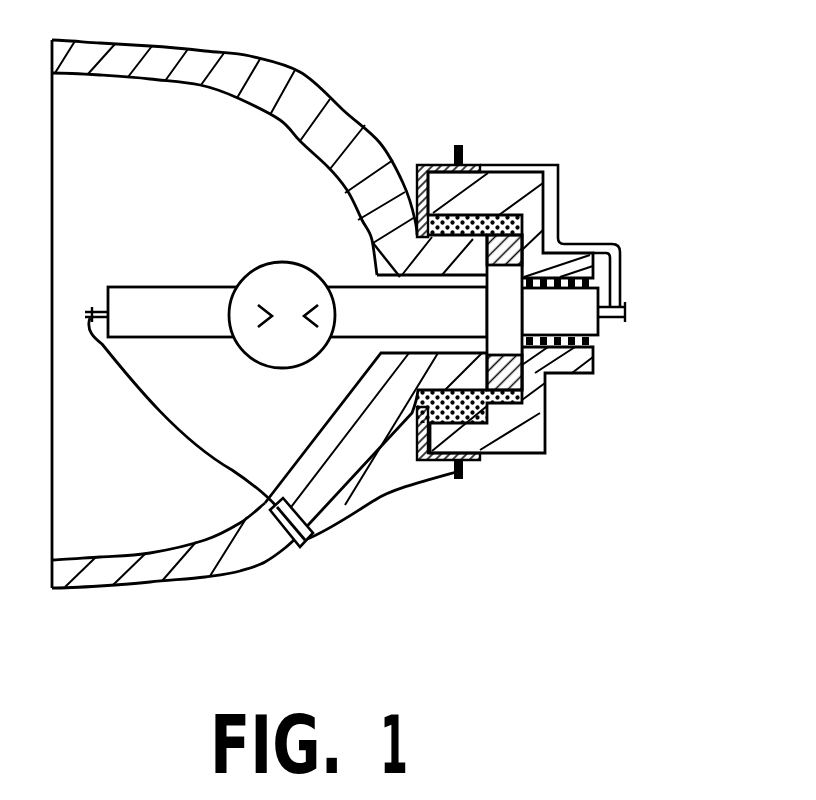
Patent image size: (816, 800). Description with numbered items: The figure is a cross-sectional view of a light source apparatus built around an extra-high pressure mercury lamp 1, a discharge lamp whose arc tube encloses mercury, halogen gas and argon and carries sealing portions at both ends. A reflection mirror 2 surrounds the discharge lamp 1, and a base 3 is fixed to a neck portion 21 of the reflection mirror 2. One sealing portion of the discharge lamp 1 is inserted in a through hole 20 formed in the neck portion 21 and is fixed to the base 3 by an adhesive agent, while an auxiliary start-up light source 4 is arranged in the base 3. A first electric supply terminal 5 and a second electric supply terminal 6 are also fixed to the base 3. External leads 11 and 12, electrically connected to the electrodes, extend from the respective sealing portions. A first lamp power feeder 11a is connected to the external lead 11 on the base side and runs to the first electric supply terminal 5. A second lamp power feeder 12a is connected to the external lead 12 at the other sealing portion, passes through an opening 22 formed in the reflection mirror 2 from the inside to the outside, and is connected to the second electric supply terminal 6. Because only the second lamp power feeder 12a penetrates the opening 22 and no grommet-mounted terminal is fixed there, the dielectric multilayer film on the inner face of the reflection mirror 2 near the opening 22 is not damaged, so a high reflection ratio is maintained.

The extra-high pressure mercury lamp 1 is at (281, 262).
The reflection mirror 2 is at (293, 82).
The base 3 is at (530, 413).
The auxiliary start-up light source 4 is at (503, 323).
The first electric supply terminal 5 is at (424, 166).
The second electric supply terminal 6 is at (477, 461).
The external lead 11 is at (626, 312).
The first lamp power feeder 11a is at (556, 172).
The external lead 12 is at (84, 294).
The second lamp power feeder 12a is at (162, 405).
The through hole 20 is at (397, 346).
The neck portion 21 is at (443, 259).
The opening 22 is at (274, 562).